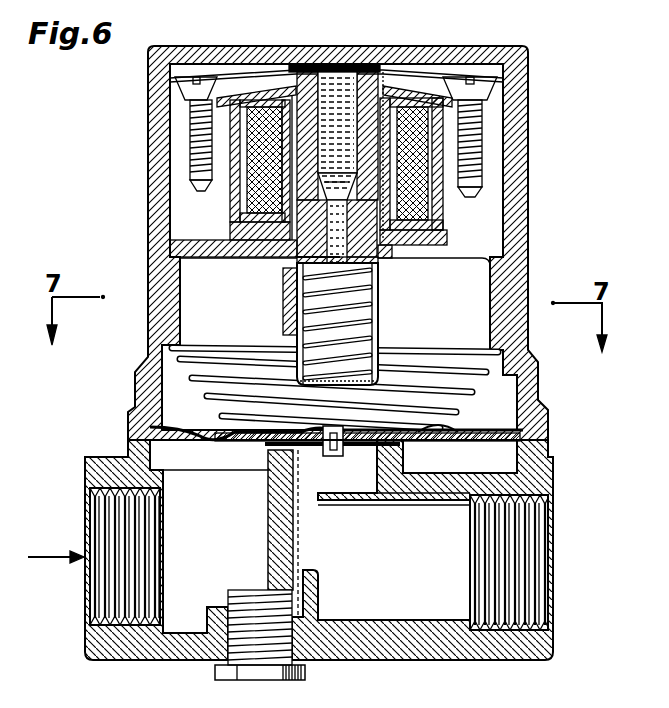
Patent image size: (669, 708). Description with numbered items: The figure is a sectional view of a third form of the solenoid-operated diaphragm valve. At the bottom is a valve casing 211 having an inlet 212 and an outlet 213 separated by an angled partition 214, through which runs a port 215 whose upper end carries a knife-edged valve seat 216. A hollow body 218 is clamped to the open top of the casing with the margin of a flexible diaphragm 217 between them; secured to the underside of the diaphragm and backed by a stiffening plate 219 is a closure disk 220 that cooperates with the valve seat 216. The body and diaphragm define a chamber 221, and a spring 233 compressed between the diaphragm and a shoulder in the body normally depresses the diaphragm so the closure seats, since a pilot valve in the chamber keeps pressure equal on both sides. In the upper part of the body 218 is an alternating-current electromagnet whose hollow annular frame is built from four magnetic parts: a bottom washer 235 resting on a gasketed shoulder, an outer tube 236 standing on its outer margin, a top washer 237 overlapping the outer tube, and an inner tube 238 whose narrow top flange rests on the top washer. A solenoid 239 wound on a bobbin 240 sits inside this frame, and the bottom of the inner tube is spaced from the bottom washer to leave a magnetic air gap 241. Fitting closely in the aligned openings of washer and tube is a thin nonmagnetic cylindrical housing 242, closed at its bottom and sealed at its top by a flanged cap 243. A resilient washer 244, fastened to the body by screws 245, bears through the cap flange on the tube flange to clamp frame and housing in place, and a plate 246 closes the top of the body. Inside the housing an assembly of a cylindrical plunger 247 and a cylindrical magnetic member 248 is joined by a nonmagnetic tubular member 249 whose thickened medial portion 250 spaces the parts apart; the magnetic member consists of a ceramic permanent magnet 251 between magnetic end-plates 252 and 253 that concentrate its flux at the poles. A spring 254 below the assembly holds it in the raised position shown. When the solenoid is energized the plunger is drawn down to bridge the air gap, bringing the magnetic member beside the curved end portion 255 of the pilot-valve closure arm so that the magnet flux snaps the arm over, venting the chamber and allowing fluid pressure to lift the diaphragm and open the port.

The valve casing 211 is at (435, 647).
The inlet 212 is at (232, 562).
The outlet 213 is at (452, 567).
The angled partition 214 is at (395, 498).
The port 215 is at (300, 487).
The knife-edged valve seat 216 is at (390, 444).
The flexible diaphragm 217 is at (484, 432).
The hollow body 218 is at (513, 327).
The stiffening plate 219 is at (268, 430).
The closure disk 220 is at (312, 470).
The chamber 221 is at (197, 327).
The spring 233 is at (190, 380).
The bottom washer 235 is at (493, 273).
The outer tube 236 is at (433, 203).
The top washer 237 is at (413, 75).
The inner tube 238 is at (285, 127).
The solenoid 239 is at (250, 192).
The bobbin 240 is at (277, 207).
The magnetic air gap 241 is at (337, 224).
The cylindrical housing 242 is at (376, 300).
The flanged cap 243 is at (340, 68).
The resilient washer 244 is at (205, 77).
The screws 245 is at (460, 83).
The plate 246 is at (315, 68).
The plunger 247 is at (320, 125).
The magnetic member 248 is at (385, 250).
The tubular member 249 is at (337, 136).
The thickened medial portion 250 is at (336, 169).
The permanent magnet 251 is at (297, 258).
The magnetic end-plate 252 is at (243, 244).
The magnetic end-plate 253 is at (300, 264).
The spring 254 is at (366, 328).
The curved end portion 255 is at (283, 313).